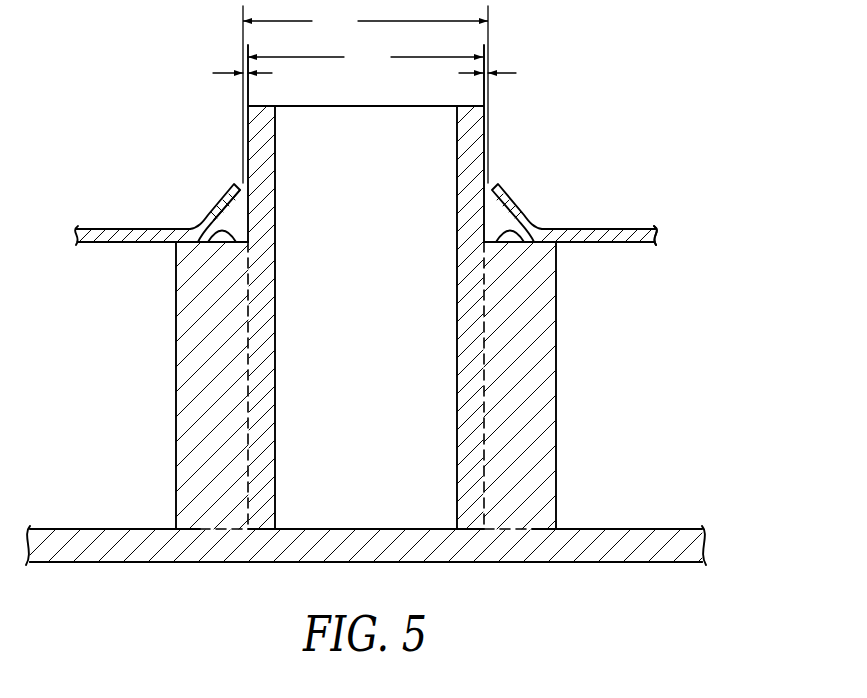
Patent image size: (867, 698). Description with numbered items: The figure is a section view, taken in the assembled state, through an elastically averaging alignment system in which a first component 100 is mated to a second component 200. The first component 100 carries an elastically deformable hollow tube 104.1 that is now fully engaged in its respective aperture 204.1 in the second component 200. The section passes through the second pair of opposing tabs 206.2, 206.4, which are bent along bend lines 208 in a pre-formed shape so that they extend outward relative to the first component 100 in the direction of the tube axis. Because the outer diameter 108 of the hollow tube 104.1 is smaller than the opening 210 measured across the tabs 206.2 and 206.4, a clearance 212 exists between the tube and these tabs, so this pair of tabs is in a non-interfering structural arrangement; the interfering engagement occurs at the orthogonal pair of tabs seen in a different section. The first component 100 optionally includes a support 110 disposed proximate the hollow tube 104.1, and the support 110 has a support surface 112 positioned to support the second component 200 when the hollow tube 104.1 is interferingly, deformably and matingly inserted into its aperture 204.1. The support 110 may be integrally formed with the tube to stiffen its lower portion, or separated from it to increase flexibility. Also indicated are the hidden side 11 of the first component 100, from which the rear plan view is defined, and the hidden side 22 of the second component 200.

The non-visible side of first alignment member 11 is at (628, 242).
The non-visible side of second alignment member 22 is at (647, 562).
The first component 100 is at (602, 527).
The hollow tube 104.1 is at (485, 150).
The outer diameter 108 is at (388, 70).
The support 110 is at (633, 378).
The support surface 112 is at (528, 236).
The second component 200 is at (632, 226).
The aperture 204.1 is at (235, 218).
The tab 206.2 is at (522, 203).
The tab 206.4 is at (210, 205).
The bend line 208 is at (550, 228).
The opening 210 is at (355, 35).
The clearance 212 is at (213, 85).